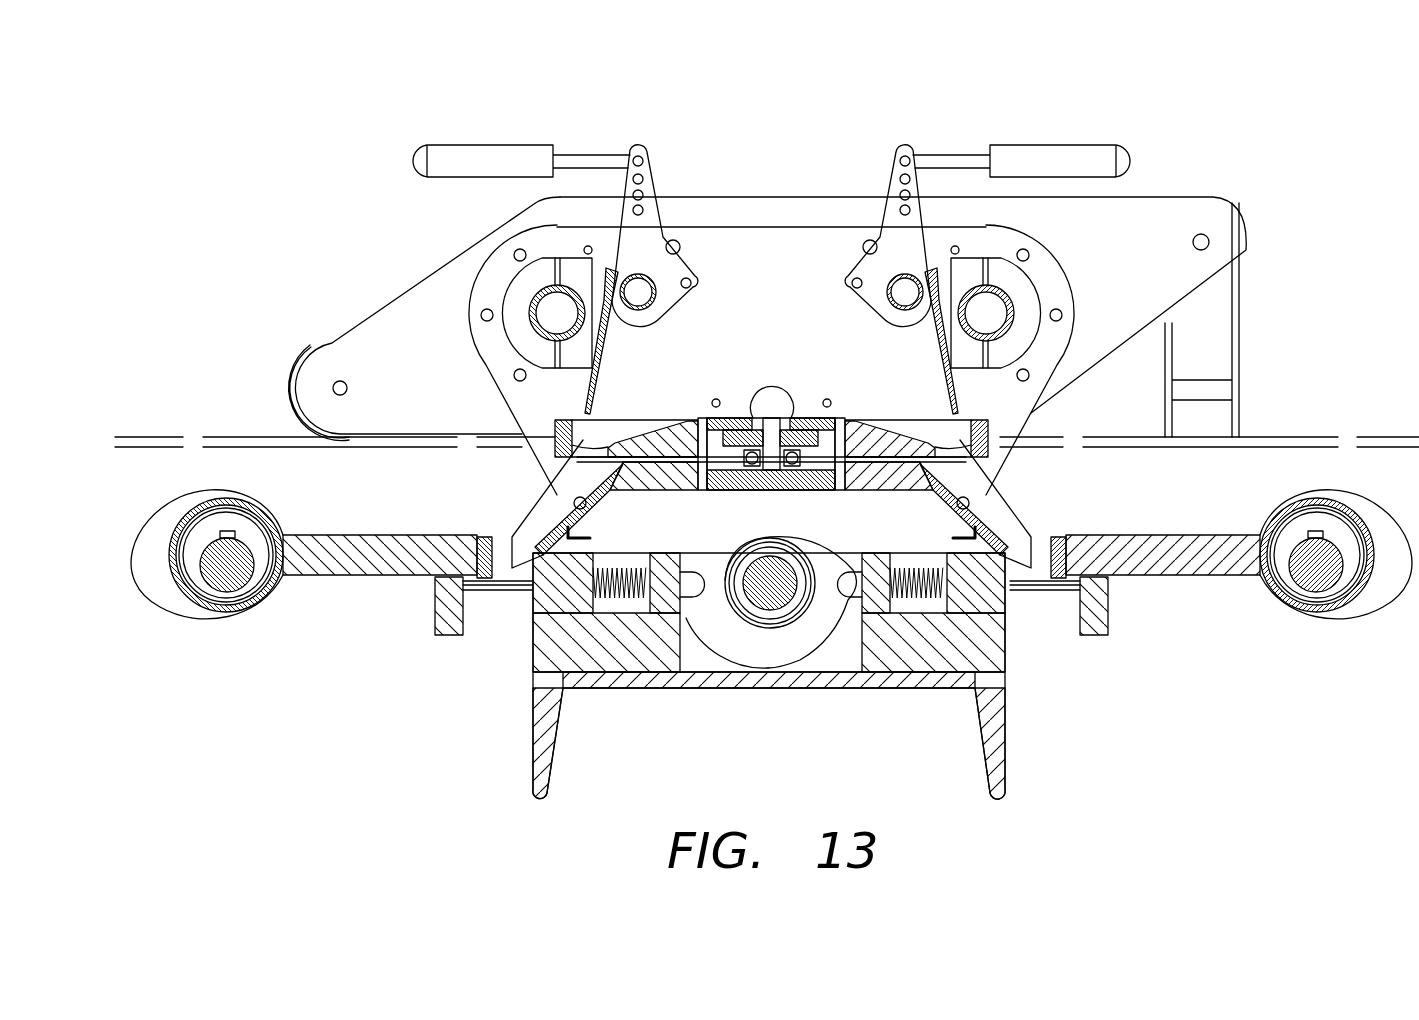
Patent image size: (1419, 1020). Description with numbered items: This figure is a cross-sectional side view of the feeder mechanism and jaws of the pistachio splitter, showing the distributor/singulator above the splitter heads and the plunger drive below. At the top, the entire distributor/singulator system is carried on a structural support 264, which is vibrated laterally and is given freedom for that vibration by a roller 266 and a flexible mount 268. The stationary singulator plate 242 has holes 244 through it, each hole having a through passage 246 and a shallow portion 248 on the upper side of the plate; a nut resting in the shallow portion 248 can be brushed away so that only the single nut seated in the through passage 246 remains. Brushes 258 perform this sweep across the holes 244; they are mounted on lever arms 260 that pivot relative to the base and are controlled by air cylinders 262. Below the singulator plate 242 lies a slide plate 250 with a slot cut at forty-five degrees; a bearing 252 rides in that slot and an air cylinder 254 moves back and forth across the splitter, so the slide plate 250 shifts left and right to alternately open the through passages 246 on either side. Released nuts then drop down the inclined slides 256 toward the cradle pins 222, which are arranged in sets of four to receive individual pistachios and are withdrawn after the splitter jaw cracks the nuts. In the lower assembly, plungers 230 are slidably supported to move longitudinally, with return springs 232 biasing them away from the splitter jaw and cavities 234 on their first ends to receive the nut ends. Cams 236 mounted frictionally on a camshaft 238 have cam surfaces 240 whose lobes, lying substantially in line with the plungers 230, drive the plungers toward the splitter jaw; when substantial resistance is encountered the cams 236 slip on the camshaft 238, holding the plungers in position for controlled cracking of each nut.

The cradle pins 222 is at (1053, 612).
The plungers 230 is at (690, 580).
The return springs 232 is at (613, 572).
The cavities 234 is at (528, 593).
The cams 236 is at (815, 560).
The camshaft 238 is at (775, 600).
The cam surfaces 240 is at (850, 547).
The singulator plate 242 is at (1033, 410).
The holes 244 is at (553, 467).
The through passage 246 is at (585, 443).
The shallow portion 248 is at (655, 420).
The slide plate 250 is at (995, 460).
The bearing 252 is at (763, 488).
The air cylinder 254 is at (798, 390).
The inclined slides 256 is at (540, 522).
The brushes 258 is at (598, 382).
The lever arms 260 is at (650, 190).
The air cylinders 262 is at (502, 145).
The structural support 264 is at (402, 283).
The roller 266 is at (292, 392).
The flexible mount 268 is at (1245, 327).